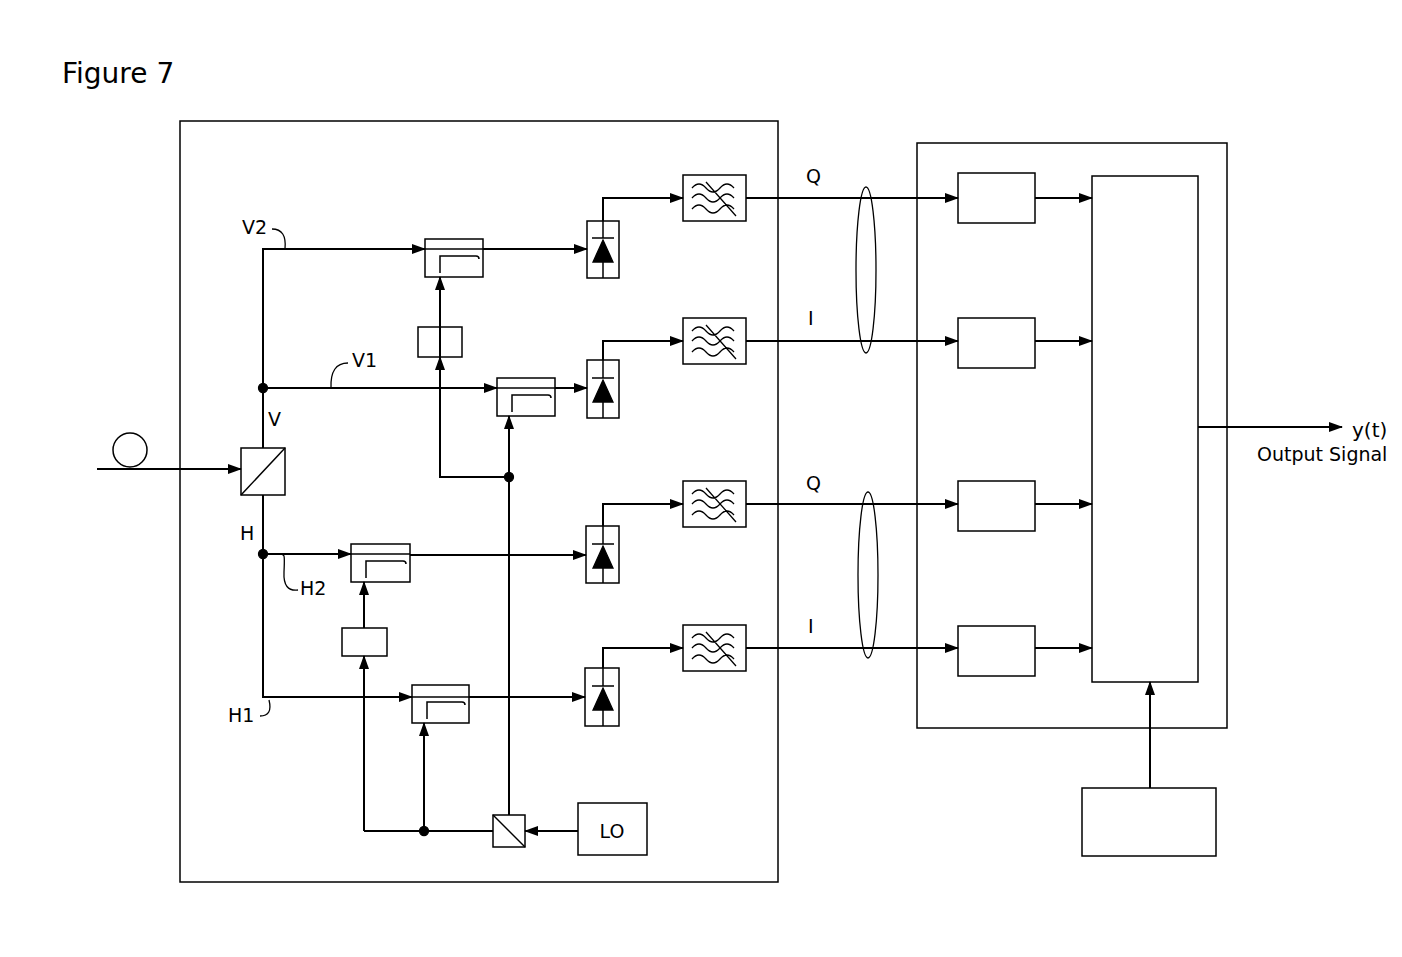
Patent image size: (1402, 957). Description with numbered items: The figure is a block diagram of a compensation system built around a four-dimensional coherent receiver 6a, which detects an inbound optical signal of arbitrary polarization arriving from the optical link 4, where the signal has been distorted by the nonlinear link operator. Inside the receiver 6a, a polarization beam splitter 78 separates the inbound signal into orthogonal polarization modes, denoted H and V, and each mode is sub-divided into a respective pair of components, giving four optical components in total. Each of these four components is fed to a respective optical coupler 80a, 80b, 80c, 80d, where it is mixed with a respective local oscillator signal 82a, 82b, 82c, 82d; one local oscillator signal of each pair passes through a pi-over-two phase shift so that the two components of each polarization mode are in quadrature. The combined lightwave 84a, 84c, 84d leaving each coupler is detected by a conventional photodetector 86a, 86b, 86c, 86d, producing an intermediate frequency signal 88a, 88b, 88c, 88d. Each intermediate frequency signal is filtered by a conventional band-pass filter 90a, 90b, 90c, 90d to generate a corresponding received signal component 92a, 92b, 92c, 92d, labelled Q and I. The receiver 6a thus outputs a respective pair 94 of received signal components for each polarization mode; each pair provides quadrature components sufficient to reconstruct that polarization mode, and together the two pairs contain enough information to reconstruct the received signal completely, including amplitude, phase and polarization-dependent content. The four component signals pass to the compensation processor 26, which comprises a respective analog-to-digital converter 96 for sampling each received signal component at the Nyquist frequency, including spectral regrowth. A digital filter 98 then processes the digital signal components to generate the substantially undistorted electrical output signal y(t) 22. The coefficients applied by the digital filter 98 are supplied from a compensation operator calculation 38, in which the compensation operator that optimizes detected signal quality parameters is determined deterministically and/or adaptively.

The optical link 4 is at (152, 471).
The receiver 6a is at (147, 202).
The output signal y(t) 22 is at (1265, 427).
The compensation processor 26 is at (1047, 143).
The compensation operator determination 38 is at (1194, 788).
The polarization beam splitter 78 is at (252, 448).
The optical coupler 80a is at (441, 239).
The optical coupler 80b is at (507, 378).
The optical coupler 80c is at (381, 544).
The optical coupler 80d is at (441, 685).
The local oscillator signal 82a is at (440, 306).
The local oscillator signal 82b is at (509, 456).
The local oscillator signal 82c is at (364, 611).
The local oscillator signal 82d is at (424, 758).
The combined lightwave 84a is at (507, 249).
The combined lightwave 84c is at (446, 555).
The combined lightwave 84d is at (521, 697).
The photodetector 86a is at (619, 238).
The photodetector 86b is at (619, 386).
The photodetector 86c is at (619, 545).
The photodetector 86d is at (619, 688).
The intermediate frequency signal 88a is at (616, 197).
The intermediate frequency signal 88b is at (617, 340).
The intermediate frequency signal 88c is at (617, 503).
The intermediate frequency signal 88d is at (617, 647).
The band-pass filter 90a is at (707, 175).
The band-pass filter 90b is at (721, 318).
The band-pass filter 90c is at (722, 481).
The band-pass filter 90d is at (722, 625).
The received signal component 92a is at (768, 199).
The received signal component 92b is at (768, 342).
The received signal component 92c is at (768, 505).
The received signal component 92d is at (768, 649).
The pair of received signal components 94 is at (866, 354).
The analog-to-digital converter 96 is at (1003, 223).
The digital filter 98 is at (1128, 532).